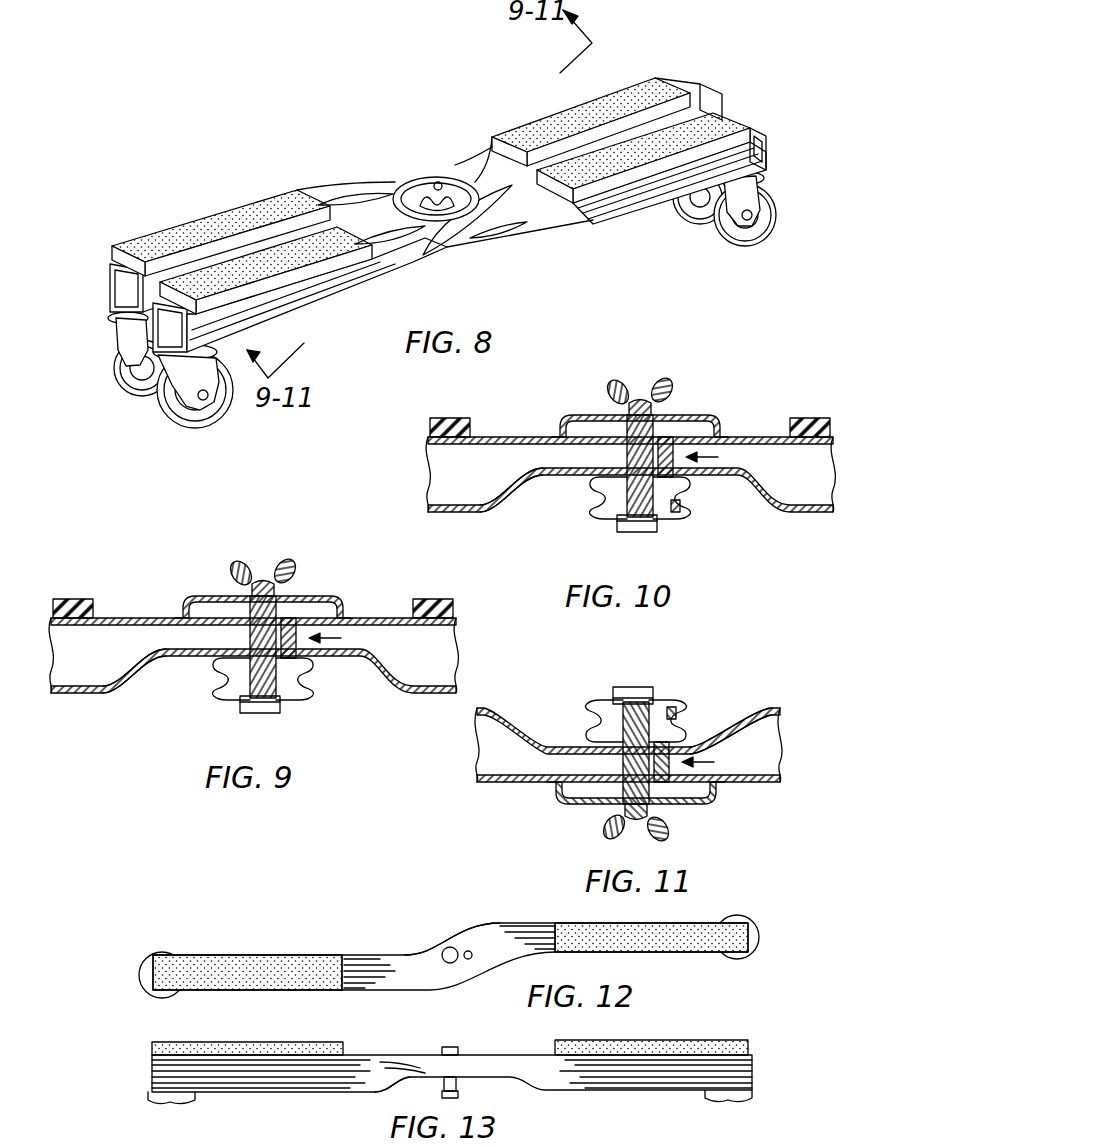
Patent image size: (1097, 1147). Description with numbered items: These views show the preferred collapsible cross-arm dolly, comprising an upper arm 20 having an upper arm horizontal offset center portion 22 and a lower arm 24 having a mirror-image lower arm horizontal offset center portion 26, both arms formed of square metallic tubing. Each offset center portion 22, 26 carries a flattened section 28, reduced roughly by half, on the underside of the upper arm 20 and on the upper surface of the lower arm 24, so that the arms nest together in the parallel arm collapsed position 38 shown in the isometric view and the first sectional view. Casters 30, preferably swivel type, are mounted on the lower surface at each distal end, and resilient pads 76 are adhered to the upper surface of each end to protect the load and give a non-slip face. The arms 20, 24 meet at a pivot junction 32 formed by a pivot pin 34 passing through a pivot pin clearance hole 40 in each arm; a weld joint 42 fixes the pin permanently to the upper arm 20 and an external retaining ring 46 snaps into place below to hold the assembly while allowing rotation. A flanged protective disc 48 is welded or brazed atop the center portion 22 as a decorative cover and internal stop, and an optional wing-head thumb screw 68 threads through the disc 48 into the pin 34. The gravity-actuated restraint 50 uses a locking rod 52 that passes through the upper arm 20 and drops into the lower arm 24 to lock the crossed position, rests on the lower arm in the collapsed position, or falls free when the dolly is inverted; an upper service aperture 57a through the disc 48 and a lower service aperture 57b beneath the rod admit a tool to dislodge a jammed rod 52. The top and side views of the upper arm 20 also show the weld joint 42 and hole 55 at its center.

In FIG. 8, the upper arm 20 is at (116, 373).
In FIG. 10, the upper arm 20 is at (519, 398).
In FIG. 9, the upper arm 20 is at (253, 655).
In FIG. 11, the upper arm 20 is at (484, 782).
In FIG. 12, the upper arm 20 is at (310, 955).
In FIG. 13, the upper arm 20 is at (452, 1073).
In FIG. 8, the upper arm horizontal offset center portion 22 is at (482, 122).
In FIG. 12, the upper arm horizontal offset center portion 22 is at (432, 942).
In FIG. 8, the lower arm 24 is at (110, 288).
In FIG. 10, the lower arm 24 is at (668, 490).
In FIG. 9, the lower arm 24 is at (213, 688).
In FIG. 11, the lower arm 24 is at (600, 718).
In FIG. 8, the lower arm horizontal offset center portion 26 is at (468, 241).
In FIG. 10, the flattened section 28 is at (556, 488).
In FIG. 9, the flattened section 28 is at (180, 657).
In FIG. 11, the flattened section 28 is at (742, 716).
In FIG. 13, the flattened section 28 is at (410, 1080).
In FIG. 8, the caster 30 is at (182, 435).
In FIG. 12, the caster 30 is at (158, 953).
In FIG. 13, the caster 30 is at (158, 1098).
In FIG. 10, the pivot junction 32 is at (632, 535).
In FIG. 9, the pivot junction 32 is at (252, 722).
In FIG. 11, the pivot junction 32 is at (630, 660).
In FIG. 10, the pivot pin 34 is at (628, 533).
In FIG. 9, the pivot pin 34 is at (283, 705).
In FIG. 11, the pivot pin 34 is at (690, 648).
In FIG. 12, the pivot pin 34 is at (447, 963).
In FIG. 13, the pivot pin 34 is at (460, 1093).
In FIG. 8, the parallel arm collapsed position 38 is at (283, 165).
In FIG. 10, the pivot pin clearance hole 40 is at (612, 480).
In FIG. 9, the pivot pin clearance hole 40 is at (300, 690).
In FIG. 11, the pivot pin clearance hole 40 is at (628, 780).
In FIG. 12, the weld joint 42 is at (456, 948).
In FIG. 10, the external retaining ring 46 is at (656, 516).
In FIG. 9, the external retaining ring 46 is at (292, 702).
In FIG. 11, the external retaining ring 46 is at (612, 700).
In FIG. 8, the flanged protective disc 48 is at (405, 185).
In FIG. 10, the flanged protective disc 48 is at (590, 415).
In FIG. 9, the flanged protective disc 48 is at (190, 600).
In FIG. 11, the flanged protective disc 48 is at (572, 803).
In FIG. 10, the gravity-actuated restraint 50 is at (718, 457).
In FIG. 9, the gravity-actuated restraint 50 is at (341, 638).
In FIG. 11, the gravity-actuated restraint 50 is at (714, 762).
In FIG. 10, the locking rod 52 is at (668, 440).
In FIG. 9, the locking rod 52 is at (296, 610).
In FIG. 11, the locking rod 52 is at (665, 745).
In FIG. 12, the pin hole 55 is at (470, 959).
In FIG. 8, the upper service aperture 57a is at (437, 172).
In FIG. 9, the upper service aperture 57a is at (298, 598).
In FIG. 11, the upper service aperture 57a is at (672, 800).
In FIG. 10, the lower service aperture 57b is at (674, 512).
In FIG. 8, the thumb screw 68 is at (430, 178).
In FIG. 10, the thumb screw 68 is at (641, 383).
In FIG. 9, the thumb screw 68 is at (243, 565).
In FIG. 11, the thumb screw 68 is at (662, 822).
In FIG. 8, the resilient pad 76 is at (165, 230).
In FIG. 10, the resilient pad 76 is at (430, 427).
In FIG. 9, the resilient pad 76 is at (80, 597).
In FIG. 12, the resilient pad 76 is at (235, 955).
In FIG. 13, the resilient pad 76 is at (160, 1042).